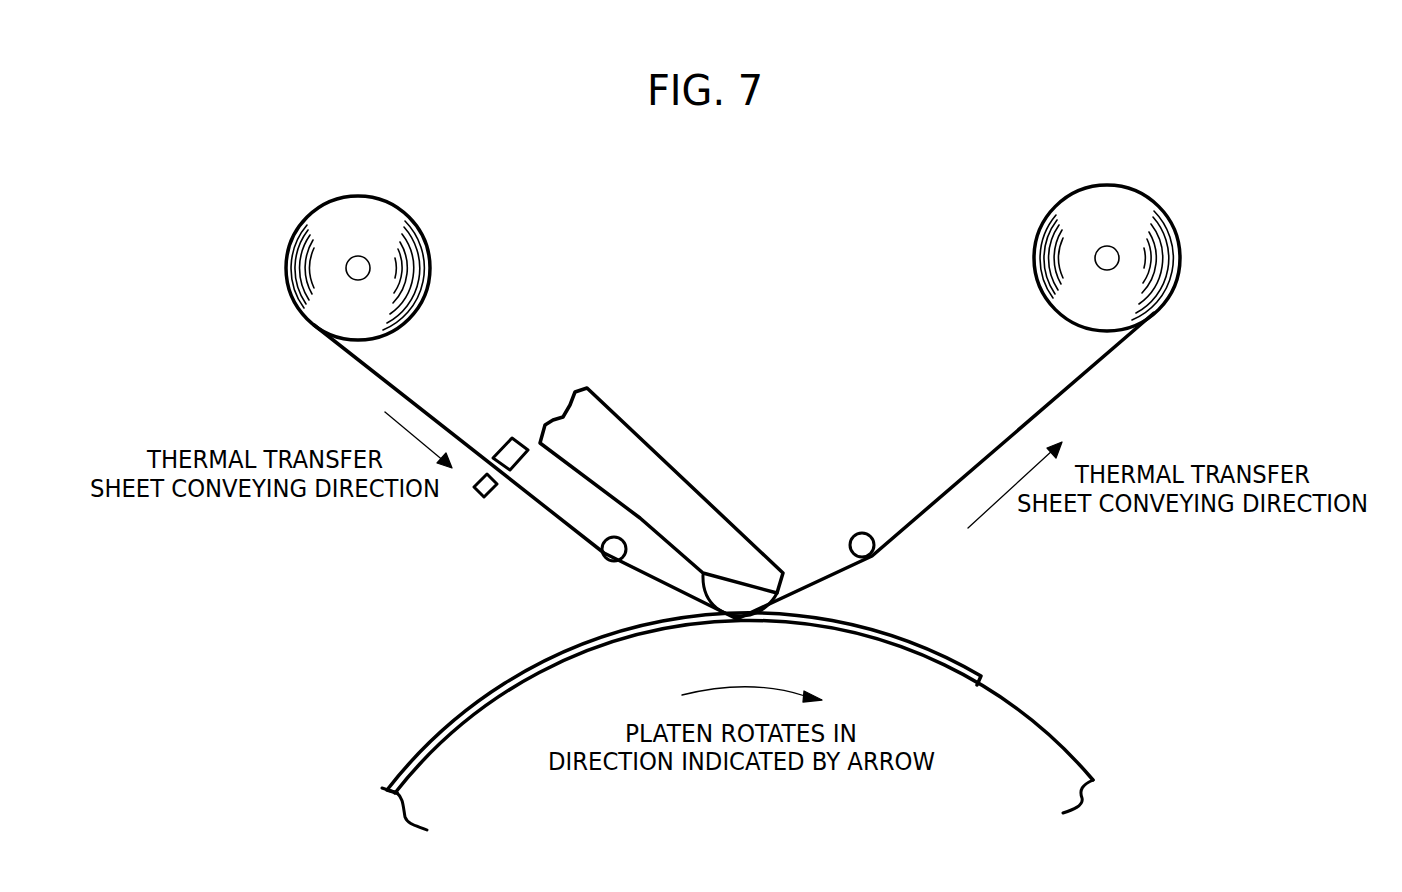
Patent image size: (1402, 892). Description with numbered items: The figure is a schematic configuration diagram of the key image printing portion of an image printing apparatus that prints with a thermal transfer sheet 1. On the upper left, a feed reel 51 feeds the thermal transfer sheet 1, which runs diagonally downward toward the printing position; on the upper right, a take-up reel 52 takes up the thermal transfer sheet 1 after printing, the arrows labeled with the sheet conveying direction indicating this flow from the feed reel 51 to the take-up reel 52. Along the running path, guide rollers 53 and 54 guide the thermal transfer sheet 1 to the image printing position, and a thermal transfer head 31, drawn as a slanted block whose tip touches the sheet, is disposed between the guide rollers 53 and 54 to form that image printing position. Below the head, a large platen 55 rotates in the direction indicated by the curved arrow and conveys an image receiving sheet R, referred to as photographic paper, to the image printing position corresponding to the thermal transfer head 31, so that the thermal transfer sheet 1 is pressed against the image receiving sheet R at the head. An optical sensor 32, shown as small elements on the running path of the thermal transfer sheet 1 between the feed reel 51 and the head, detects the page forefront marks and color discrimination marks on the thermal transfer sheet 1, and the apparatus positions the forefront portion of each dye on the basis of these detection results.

The thermal transfer sheet 1 is at (393, 383).
The thermal transfer head 31 is at (733, 610).
The optical sensor 32 is at (510, 443).
The feed reel 51 is at (400, 226).
The take-up reel 52 is at (1138, 215).
The guide roller 53 is at (613, 552).
The guide roller 54 is at (865, 550).
The platen 55 is at (423, 797).
The image receiving sheet R is at (523, 678).